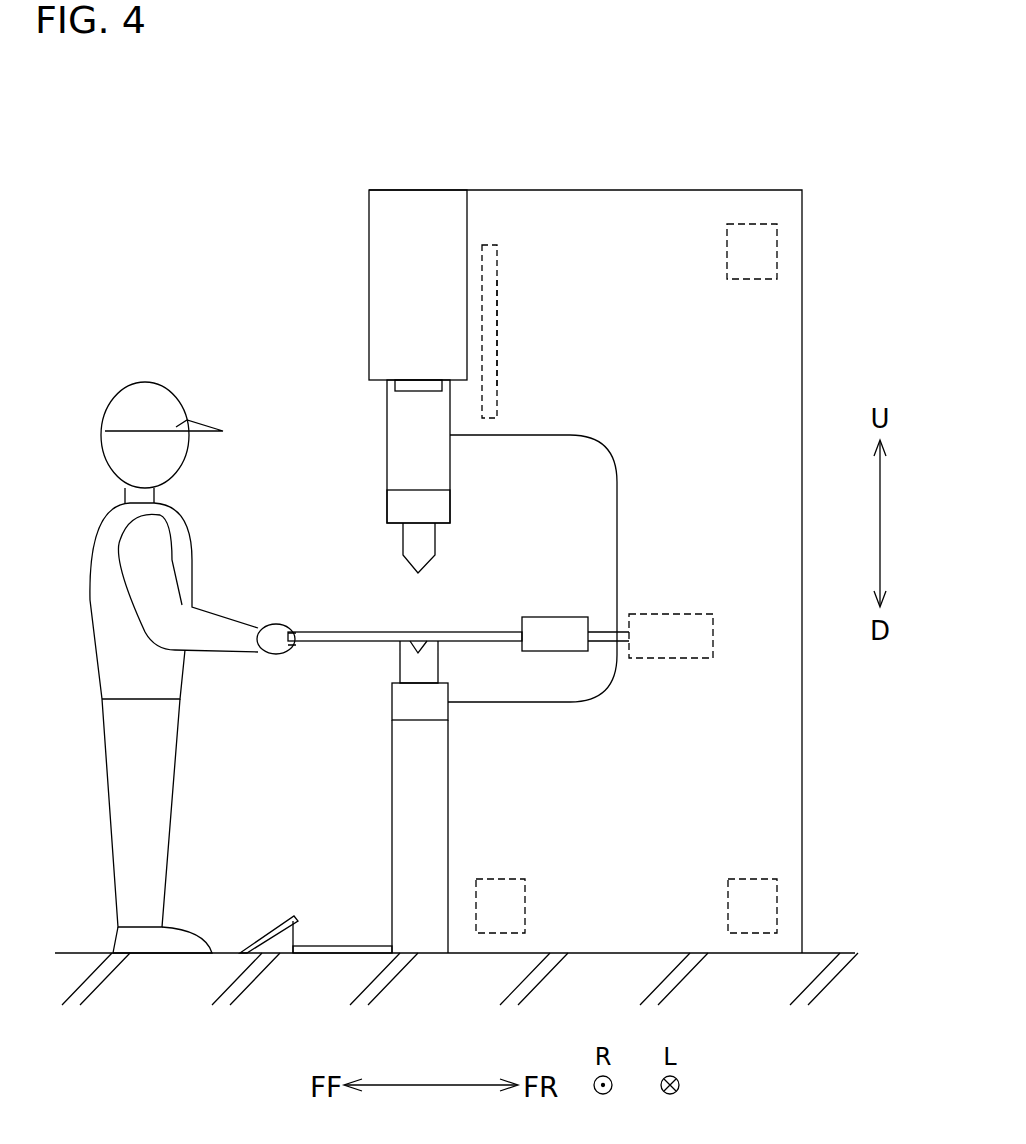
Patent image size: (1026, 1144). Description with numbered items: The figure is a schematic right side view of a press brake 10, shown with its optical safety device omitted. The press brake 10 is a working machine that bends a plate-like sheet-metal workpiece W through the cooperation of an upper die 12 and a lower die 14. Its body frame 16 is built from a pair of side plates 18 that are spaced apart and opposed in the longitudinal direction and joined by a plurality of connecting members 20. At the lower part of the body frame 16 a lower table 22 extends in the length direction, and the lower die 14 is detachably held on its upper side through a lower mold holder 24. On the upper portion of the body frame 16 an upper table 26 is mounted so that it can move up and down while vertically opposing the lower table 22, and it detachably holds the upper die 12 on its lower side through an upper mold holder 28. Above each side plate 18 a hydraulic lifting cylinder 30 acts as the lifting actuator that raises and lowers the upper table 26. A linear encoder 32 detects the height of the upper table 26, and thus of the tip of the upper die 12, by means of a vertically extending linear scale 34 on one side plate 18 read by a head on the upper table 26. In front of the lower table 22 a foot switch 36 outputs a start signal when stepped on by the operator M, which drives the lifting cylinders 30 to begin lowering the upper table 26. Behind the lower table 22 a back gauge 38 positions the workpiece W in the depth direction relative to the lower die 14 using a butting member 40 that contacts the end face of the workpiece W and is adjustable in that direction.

The press brake 10 is at (636, 486).
The upper die 12 is at (403, 548).
The lower die 14 is at (400, 660).
The body frame 16 is at (806, 700).
The side plate 18 is at (693, 462).
The connecting member 20 is at (750, 280).
The lower table 22 is at (408, 845).
The lower mold holder 24 is at (397, 705).
The upper table 26 is at (387, 440).
The upper mold holder 28 is at (387, 508).
The hydraulic lifting cylinder 30 is at (369, 252).
The linear encoder 32 is at (500, 268).
The linear scale 34 is at (497, 316).
The foot switch 36 is at (270, 930).
The back gauge 38 is at (664, 612).
The butting member 40 is at (573, 617).
The workpiece W is at (360, 633).
The operator M is at (145, 380).